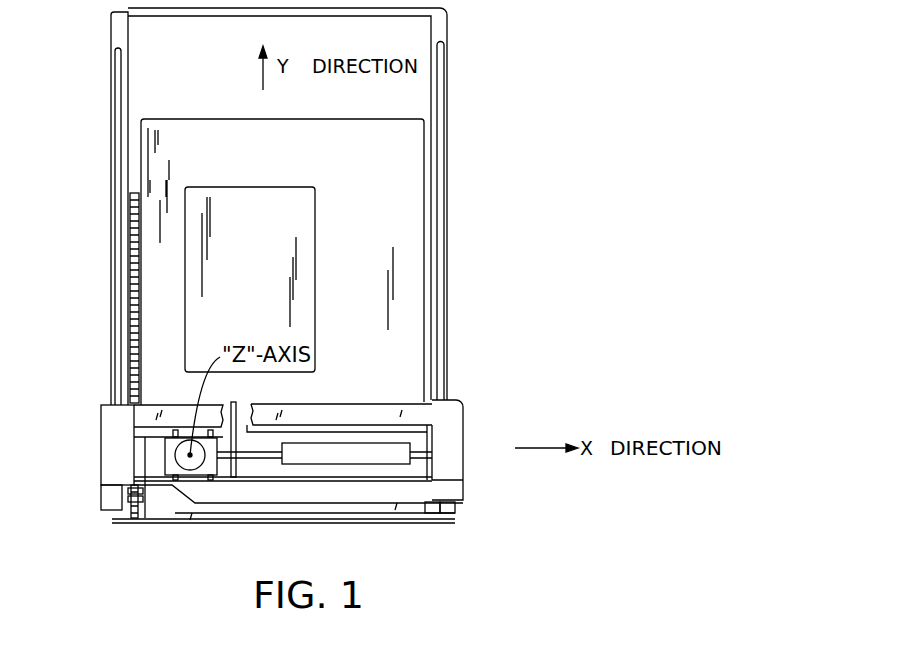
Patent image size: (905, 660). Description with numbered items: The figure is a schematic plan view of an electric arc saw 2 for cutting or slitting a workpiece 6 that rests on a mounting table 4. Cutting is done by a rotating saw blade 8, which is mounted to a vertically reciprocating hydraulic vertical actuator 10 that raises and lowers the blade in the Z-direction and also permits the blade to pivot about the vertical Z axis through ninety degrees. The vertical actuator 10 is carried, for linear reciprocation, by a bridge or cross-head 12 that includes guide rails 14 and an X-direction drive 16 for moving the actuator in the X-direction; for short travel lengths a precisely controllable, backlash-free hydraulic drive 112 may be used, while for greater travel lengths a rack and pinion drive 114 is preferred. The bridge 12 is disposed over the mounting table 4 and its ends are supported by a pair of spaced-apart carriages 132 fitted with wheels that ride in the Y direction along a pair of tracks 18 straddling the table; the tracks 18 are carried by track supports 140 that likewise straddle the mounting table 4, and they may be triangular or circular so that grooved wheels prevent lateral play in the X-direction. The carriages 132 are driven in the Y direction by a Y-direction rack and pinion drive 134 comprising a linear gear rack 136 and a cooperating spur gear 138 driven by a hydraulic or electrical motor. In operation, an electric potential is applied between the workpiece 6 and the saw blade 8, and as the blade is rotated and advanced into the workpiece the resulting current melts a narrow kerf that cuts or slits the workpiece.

The arc saw 2 is at (631, 75).
The mounting table 4 is at (403, 162).
The workpiece 6 is at (313, 245).
The saw blade 8 is at (237, 405).
The vertical actuator 10 is at (195, 463).
The bridge 12 is at (395, 396).
The guide rails 14 is at (318, 412).
The X-direction drive 16 is at (175, 415).
The tracks 18 is at (118, 382).
The hydraulic drive 112 is at (308, 465).
The rack and pinion drive 114 is at (400, 473).
The carriages 132 is at (105, 455).
The Y-direction rack and pinion drive 134 is at (120, 513).
The linear gear rack 136 is at (130, 248).
The spur gear 138 is at (145, 505).
The track supports 140 is at (112, 315).